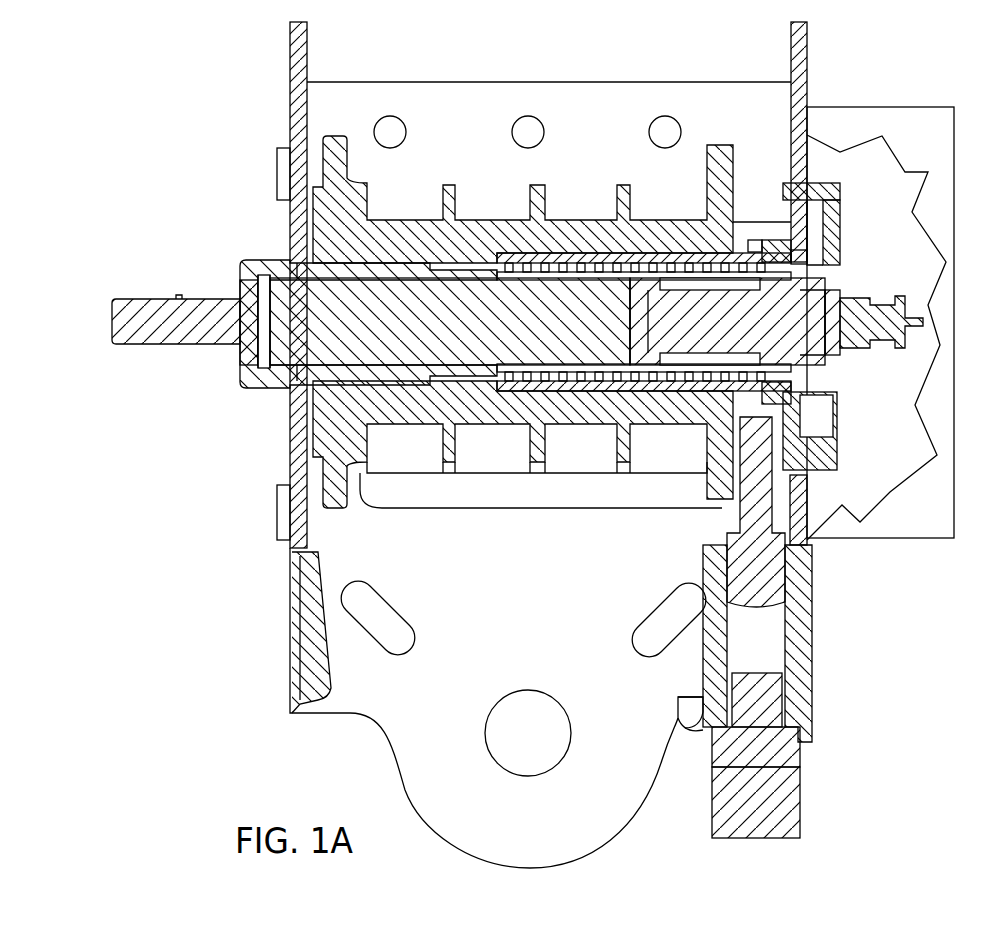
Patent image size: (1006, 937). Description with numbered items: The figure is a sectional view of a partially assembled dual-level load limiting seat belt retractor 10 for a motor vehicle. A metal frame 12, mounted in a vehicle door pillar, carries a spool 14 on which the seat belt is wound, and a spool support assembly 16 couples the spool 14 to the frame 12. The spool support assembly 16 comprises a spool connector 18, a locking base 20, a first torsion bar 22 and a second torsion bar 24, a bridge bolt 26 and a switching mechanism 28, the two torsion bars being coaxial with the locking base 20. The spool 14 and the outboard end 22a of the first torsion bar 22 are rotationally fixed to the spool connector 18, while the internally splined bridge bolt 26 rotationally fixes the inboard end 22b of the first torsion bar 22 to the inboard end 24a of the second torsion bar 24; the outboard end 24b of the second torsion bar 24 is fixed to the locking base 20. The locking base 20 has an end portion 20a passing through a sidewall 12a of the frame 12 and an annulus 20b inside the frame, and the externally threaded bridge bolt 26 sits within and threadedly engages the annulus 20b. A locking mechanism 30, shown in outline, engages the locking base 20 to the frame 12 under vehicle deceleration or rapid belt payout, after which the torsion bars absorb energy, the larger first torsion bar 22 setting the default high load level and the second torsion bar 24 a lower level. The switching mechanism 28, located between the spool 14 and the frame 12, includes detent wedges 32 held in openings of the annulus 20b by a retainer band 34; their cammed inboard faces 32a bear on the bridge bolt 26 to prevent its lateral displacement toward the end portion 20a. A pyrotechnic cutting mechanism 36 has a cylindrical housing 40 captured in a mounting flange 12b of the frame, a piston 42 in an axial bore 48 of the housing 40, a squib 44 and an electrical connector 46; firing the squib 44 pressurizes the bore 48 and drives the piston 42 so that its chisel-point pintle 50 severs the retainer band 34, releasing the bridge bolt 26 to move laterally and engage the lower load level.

The dual-level load limiting seat belt retractor 10 is at (178, 102).
The frame 12 is at (470, 90).
The sidewall 12a is at (800, 52).
The mounting flange 12b is at (692, 720).
The spool 14 is at (540, 204).
The spool support assembly 16 is at (222, 262).
The spool connector 18 is at (200, 344).
The locking base 20 is at (870, 326).
The end portion 20a is at (842, 208).
The annulus 20b is at (598, 262).
The first torsion bar 22 is at (450, 322).
The outboard end 22a is at (272, 350).
The inboard end 22b is at (612, 358).
The second torsion bar 24 is at (735, 321).
The inboard end 24a is at (652, 345).
The outboard end 24b is at (812, 318).
The bridge bolt 26 is at (616, 262).
The switching mechanism 28 is at (838, 664).
The locking mechanism 30 is at (944, 420).
The detent wedges 32 is at (706, 262).
The inboard face 32a is at (776, 262).
The retainer band 34 is at (756, 240).
The cutting mechanism 36 is at (816, 572).
The housing 40 is at (812, 632).
The piston 42 is at (736, 562).
The squib 44 is at (798, 748).
The electrical connector 46 is at (798, 795).
The axial bore 48 is at (776, 664).
The chisel-point pintle 50 is at (796, 505).